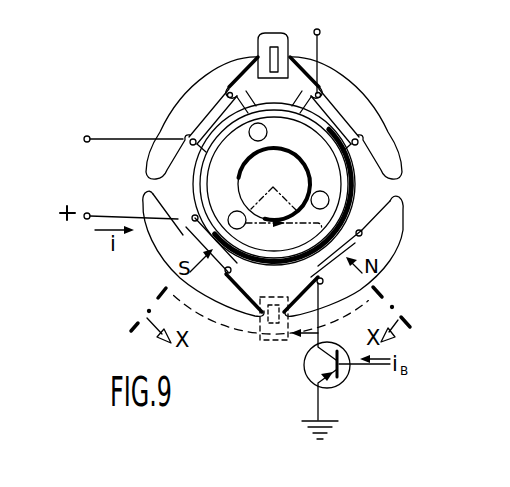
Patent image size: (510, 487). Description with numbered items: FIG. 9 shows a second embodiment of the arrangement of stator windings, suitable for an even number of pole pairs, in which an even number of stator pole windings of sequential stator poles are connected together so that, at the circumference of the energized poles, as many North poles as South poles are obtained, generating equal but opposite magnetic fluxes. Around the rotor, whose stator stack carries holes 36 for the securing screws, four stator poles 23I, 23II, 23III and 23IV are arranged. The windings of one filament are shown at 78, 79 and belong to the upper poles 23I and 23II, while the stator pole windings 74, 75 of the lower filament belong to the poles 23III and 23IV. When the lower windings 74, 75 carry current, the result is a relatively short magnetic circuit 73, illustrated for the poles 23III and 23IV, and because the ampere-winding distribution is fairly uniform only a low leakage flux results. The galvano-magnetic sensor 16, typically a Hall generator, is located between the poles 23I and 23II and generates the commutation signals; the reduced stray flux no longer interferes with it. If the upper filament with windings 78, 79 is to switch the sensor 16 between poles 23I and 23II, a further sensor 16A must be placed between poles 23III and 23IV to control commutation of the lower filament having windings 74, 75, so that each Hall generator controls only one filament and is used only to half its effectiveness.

The galvano-magnetic sensor 16 is at (258, 45).
The sensor 16A is at (268, 343).
The stator pole 23I is at (358, 103).
The stator pole 23II is at (181, 111).
The stator pole 23III is at (167, 248).
The stator pole 23IV is at (377, 243).
The holes 36 is at (267, 132).
The magnetic circuit 73 is at (234, 330).
The stator pole winding 74 is at (194, 216).
The stator pole winding 75 is at (359, 226).
The winding 78 is at (210, 117).
The winding 79 is at (346, 98).